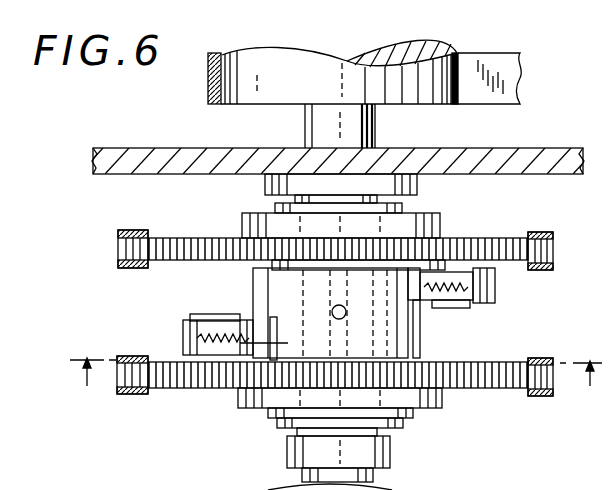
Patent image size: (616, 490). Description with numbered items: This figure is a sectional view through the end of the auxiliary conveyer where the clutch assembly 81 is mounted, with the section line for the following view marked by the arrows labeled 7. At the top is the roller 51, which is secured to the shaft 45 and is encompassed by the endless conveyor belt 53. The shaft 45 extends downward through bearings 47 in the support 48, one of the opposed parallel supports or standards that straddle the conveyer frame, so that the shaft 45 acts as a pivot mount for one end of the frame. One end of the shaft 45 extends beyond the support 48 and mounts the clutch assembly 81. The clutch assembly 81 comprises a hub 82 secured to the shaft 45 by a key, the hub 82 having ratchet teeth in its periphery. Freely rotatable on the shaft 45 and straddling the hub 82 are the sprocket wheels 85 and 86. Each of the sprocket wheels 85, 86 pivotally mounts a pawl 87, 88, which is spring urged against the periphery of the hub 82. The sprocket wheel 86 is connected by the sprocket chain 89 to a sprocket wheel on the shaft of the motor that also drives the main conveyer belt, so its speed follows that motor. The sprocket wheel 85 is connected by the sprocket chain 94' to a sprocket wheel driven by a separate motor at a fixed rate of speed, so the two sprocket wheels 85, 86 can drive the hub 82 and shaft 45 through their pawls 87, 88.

The roller 51 is at (299, 62).
The endless conveyor belt 53 is at (211, 97).
The shaft 45 is at (312, 130).
The bearings 47 is at (376, 147).
The support 48 is at (537, 138).
The clutch assembly 81 is at (566, 318).
The hub 82 is at (268, 292).
The sprocket wheel 85 is at (510, 246).
The sprocket wheel 86 is at (486, 372).
The pawl 87 is at (495, 287).
The pawl 88 is at (186, 341).
The sprocket chain 89 is at (547, 397).
The sprocket chain 94' is at (550, 237).
The section line 7- 7 is at (335, 390).